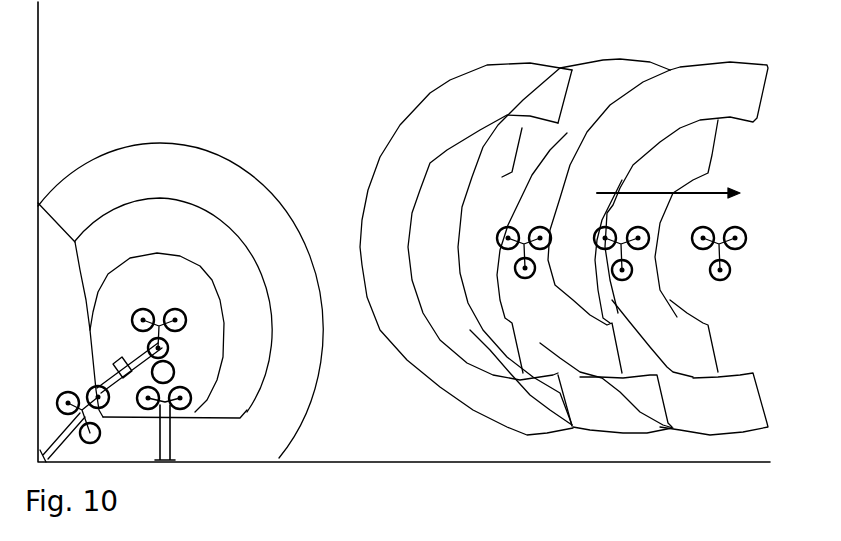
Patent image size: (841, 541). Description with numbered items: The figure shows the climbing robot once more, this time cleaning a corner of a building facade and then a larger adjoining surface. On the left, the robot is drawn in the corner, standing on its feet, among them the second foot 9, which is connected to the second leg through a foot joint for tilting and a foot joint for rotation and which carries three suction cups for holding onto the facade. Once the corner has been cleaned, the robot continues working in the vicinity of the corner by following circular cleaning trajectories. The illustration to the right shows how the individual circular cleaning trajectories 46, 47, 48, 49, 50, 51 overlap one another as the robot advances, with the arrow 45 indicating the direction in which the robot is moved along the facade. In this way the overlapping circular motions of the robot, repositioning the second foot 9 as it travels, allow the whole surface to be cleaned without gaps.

The second foot 9 is at (153, 306).
The arrows 45 is at (676, 183).
The circular cleaning trajectory 46 is at (437, 165).
The circular cleaning trajectory 47 is at (387, 167).
The circular cleaning trajectory 48 is at (583, 362).
The circular cleaning trajectory 49 is at (603, 75).
The circular cleaning trajectory 50 is at (700, 370).
The circular cleaning trajectory 51 is at (726, 75).